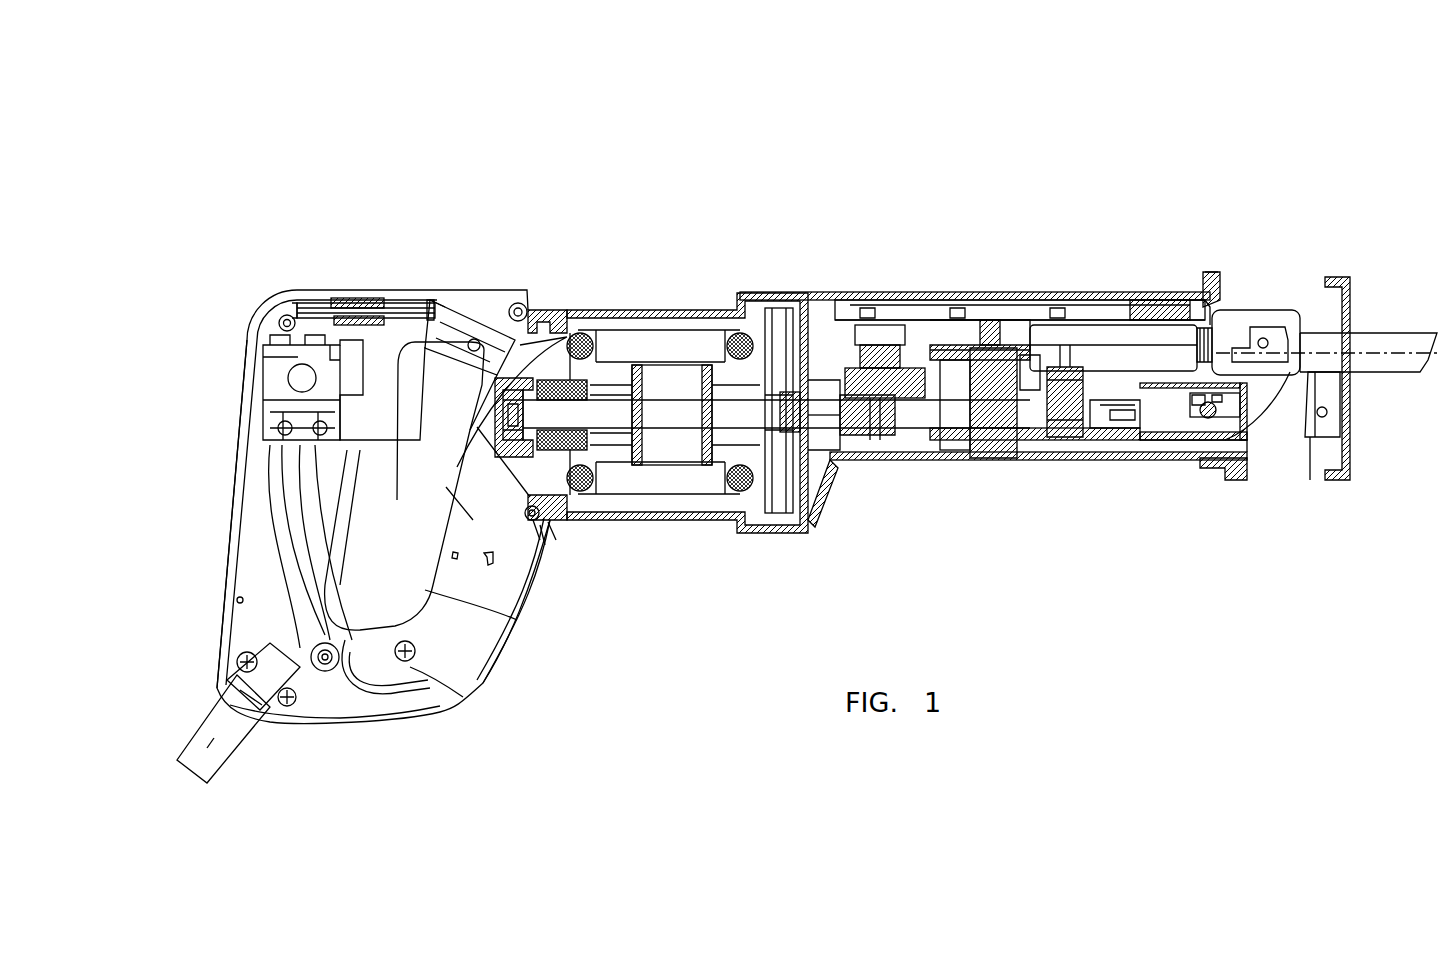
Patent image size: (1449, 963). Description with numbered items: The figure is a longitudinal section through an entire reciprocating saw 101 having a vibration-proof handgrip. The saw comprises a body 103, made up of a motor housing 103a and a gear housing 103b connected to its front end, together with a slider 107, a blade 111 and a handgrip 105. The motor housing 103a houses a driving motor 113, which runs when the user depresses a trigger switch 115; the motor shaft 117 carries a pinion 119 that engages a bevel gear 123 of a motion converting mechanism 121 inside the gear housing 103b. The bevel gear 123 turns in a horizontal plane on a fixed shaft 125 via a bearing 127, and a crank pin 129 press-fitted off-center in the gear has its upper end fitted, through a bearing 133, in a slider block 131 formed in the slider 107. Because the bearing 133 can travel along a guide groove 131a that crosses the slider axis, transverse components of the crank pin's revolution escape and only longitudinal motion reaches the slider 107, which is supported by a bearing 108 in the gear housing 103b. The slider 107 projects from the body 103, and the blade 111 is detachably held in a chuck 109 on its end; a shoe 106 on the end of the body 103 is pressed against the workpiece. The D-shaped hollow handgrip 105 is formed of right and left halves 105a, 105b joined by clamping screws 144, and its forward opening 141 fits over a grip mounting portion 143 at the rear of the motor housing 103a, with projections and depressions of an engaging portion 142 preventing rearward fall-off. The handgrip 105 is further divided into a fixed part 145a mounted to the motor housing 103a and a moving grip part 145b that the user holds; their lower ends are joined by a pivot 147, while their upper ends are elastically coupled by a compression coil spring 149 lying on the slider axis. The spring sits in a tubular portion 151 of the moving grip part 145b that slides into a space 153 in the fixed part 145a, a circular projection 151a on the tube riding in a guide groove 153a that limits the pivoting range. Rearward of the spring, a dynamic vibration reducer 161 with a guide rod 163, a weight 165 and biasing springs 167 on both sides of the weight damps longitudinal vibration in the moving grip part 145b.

The reciprocating saw 101 is at (1228, 248).
The body 103 is at (790, 298).
The motor housing 103a is at (711, 308).
The gear housing 103b is at (891, 300).
The handgrip 105 is at (240, 383).
The right half 105a is at (236, 480).
The left half 105b is at (488, 660).
The shoe 106 is at (1351, 280).
The slider 107 is at (1137, 298).
The bearing 108 is at (1064, 323).
The chuck 109 is at (1266, 380).
The blade 111 is at (508, 276).
The driving motor 113 is at (669, 470).
The trigger switch 115 is at (380, 447).
The motor shaft 117 is at (719, 460).
The pinion 119 is at (898, 432).
The motion converting mechanism 121 is at (874, 438).
The bevel gear 123 is at (878, 398).
The fixed shaft 125 is at (979, 425).
The bearing 127 is at (941, 432).
The crank pin 129 is at (1041, 442).
The slider block 131 is at (961, 345).
The guide groove 131a is at (991, 330).
The bearing 133 is at (998, 350).
The opening 141 is at (365, 410).
The engaging portion 142 is at (556, 530).
The grip mounting portion 143 is at (527, 493).
The clamping screws 144 is at (406, 662).
The fixed part 145a is at (539, 584).
The moving grip part 145b is at (222, 568).
The pivot 147 is at (323, 668).
The compression coil spring 149 is at (505, 380).
The tubular portion 151 is at (458, 312).
The circular projection 151a is at (444, 292).
The space 153 is at (455, 395).
The guide groove 153a is at (544, 307).
The dynamic vibration reducer 161 is at (299, 307).
The guide rod 163 is at (361, 307).
The weight 165 is at (344, 308).
The biasing spring 167 is at (317, 307).